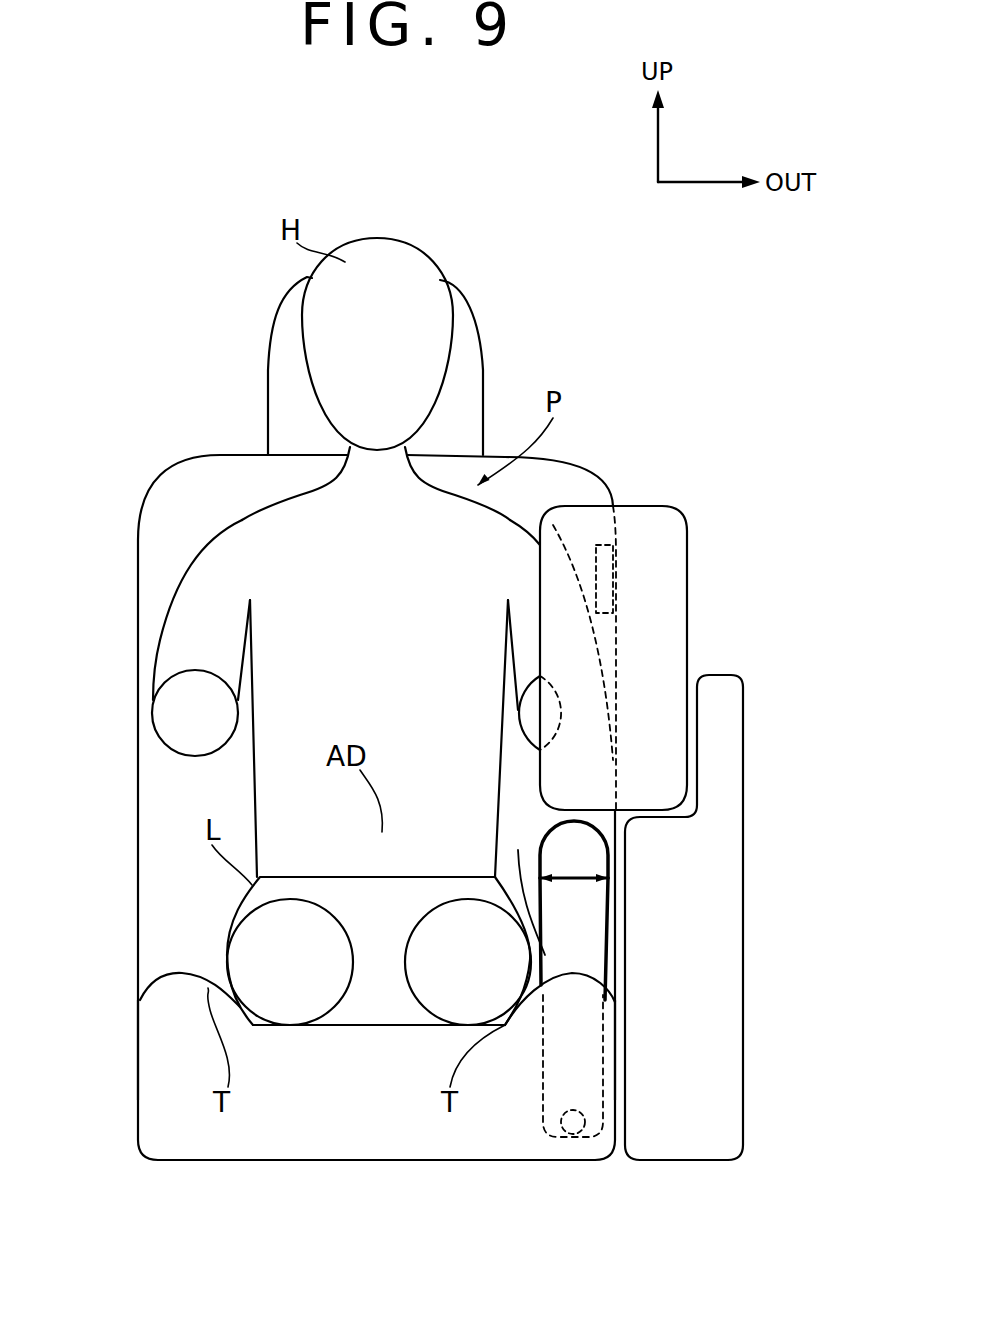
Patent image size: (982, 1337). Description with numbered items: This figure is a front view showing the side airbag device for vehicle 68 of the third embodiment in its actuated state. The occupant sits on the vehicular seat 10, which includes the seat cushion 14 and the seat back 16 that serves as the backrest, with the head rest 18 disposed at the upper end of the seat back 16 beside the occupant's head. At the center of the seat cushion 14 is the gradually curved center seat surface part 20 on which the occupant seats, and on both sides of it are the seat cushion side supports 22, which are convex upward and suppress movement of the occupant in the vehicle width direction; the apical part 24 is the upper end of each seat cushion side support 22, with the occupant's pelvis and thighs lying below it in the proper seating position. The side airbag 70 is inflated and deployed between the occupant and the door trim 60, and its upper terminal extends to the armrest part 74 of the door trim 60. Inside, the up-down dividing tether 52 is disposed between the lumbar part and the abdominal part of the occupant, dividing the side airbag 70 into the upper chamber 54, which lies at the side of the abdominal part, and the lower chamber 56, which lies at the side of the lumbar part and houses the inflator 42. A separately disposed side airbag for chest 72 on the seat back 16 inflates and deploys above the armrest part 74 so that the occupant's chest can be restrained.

The vehicular seat 10 is at (607, 490).
The seat cushion 14 is at (150, 1057).
The seat back 16 is at (150, 560).
The head rest 18 is at (472, 333).
The center seat surface part 20 is at (378, 1022).
The seat cushion side support 22 is at (153, 1003).
The apical part 24 is at (168, 990).
The inflator 42 is at (560, 1122).
The up-down dividing tether 52 is at (582, 880).
The upper chamber 54 is at (592, 872).
The lower chamber 56 is at (592, 937).
The door trim 60 is at (728, 888).
The side airbag device for vehicle 68 is at (573, 1150).
The side airbag 70 is at (592, 968).
The side airbag for chest 72 is at (677, 537).
The armrest part 74 is at (658, 812).